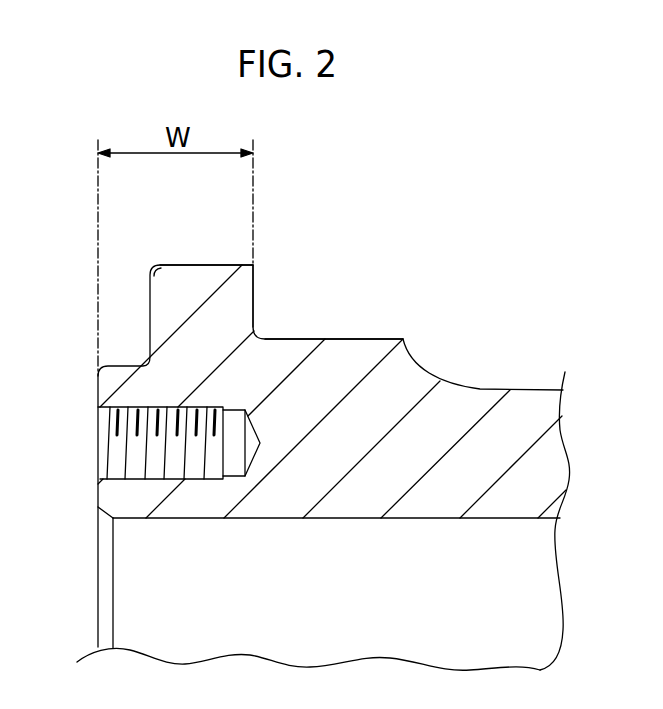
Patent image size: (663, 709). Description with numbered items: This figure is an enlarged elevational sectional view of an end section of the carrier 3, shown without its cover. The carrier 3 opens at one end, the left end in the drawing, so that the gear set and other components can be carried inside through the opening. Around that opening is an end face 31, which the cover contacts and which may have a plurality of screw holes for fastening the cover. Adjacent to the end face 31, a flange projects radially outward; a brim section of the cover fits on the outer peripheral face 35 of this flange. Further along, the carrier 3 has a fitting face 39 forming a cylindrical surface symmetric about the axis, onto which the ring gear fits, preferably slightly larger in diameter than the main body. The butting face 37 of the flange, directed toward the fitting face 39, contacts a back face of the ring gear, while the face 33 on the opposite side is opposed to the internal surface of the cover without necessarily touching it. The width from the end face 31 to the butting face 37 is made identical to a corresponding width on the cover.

The carrier 3 is at (300, 424).
The end face 31 is at (98, 437).
The face 33 is at (150, 317).
The outer peripheral face 35 is at (193, 265).
The butting face 37 is at (254, 296).
The fitting face 39 is at (345, 339).